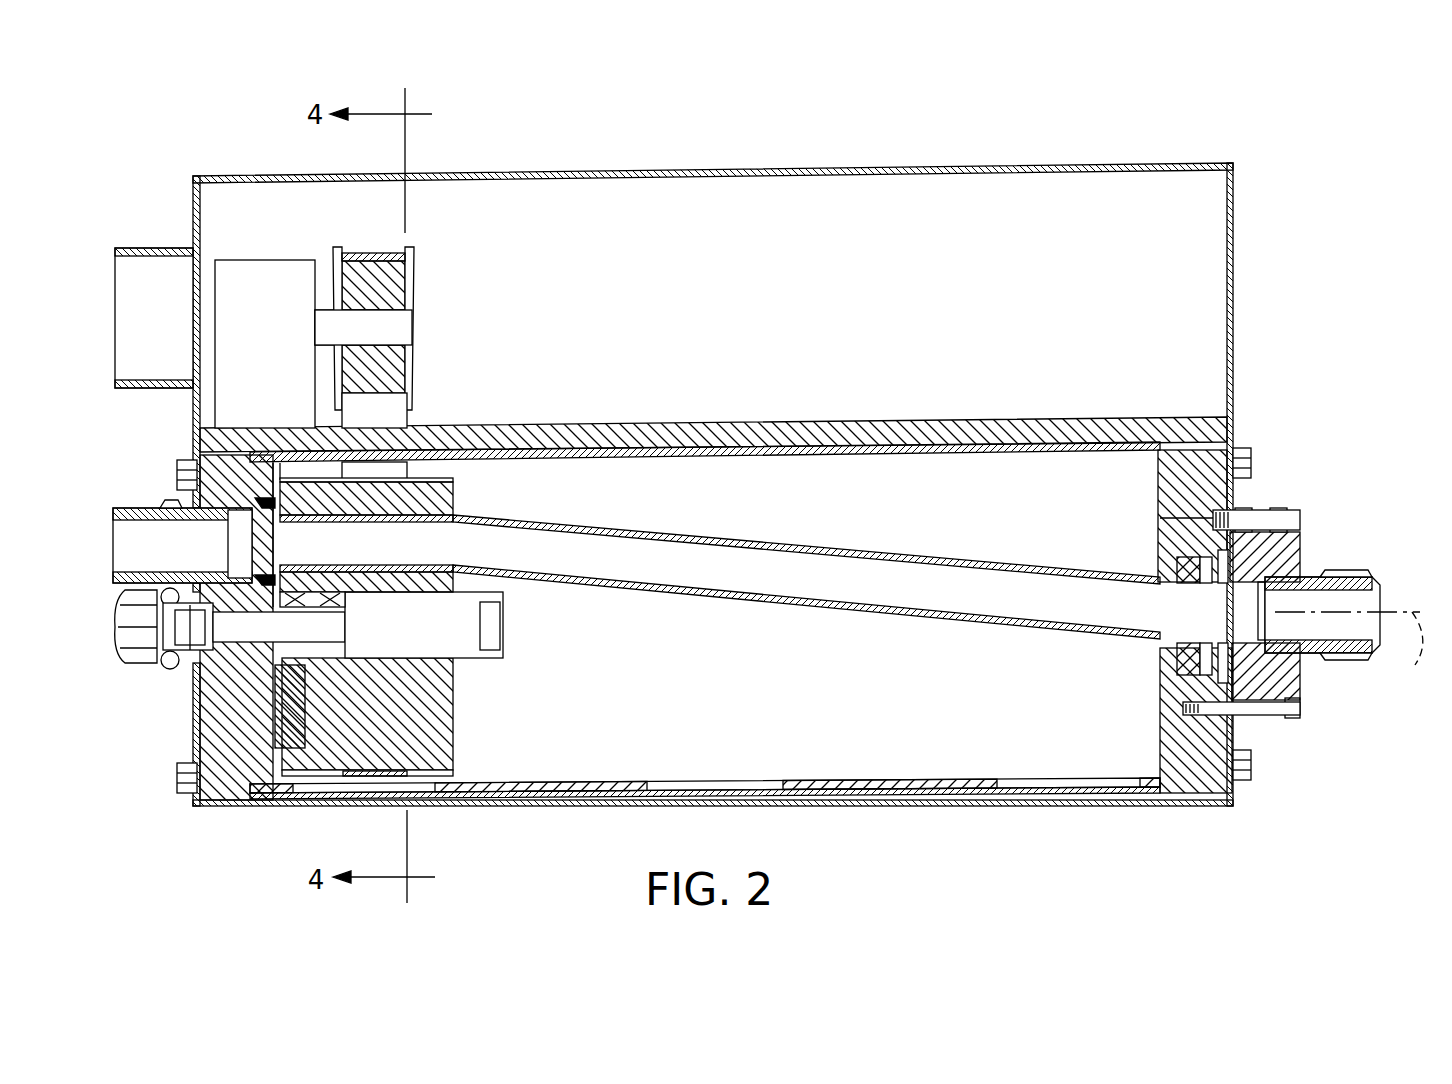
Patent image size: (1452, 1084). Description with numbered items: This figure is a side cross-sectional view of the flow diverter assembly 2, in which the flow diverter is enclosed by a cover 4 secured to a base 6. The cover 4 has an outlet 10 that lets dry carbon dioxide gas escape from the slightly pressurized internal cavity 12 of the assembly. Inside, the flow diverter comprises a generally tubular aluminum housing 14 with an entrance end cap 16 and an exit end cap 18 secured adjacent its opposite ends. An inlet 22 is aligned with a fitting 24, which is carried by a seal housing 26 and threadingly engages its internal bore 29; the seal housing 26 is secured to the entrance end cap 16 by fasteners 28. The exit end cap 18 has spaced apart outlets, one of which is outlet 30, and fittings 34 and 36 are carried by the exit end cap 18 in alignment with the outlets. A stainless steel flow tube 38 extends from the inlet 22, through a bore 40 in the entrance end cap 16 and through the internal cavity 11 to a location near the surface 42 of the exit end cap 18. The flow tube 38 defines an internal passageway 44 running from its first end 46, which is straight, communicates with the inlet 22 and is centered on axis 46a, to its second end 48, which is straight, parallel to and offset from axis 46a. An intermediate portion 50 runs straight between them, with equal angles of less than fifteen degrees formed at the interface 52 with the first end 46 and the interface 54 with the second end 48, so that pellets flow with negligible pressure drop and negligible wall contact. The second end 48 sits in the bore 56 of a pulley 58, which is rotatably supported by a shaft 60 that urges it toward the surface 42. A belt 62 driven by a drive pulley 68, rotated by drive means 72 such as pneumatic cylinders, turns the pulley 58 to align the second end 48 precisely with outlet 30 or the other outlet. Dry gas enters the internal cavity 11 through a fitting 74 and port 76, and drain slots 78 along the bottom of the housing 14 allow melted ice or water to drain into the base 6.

The flow diverter assembly 2 is at (1218, 147).
The cover 4 is at (765, 170).
The base 6 is at (1195, 797).
The outlet 10 is at (135, 317).
The internal cavity 11 is at (825, 505).
The internal cavity 12 is at (740, 302).
The housing 14 is at (935, 788).
The entrance end cap 16 is at (1162, 470).
The exit end cap 18 is at (205, 727).
The inlet 22 is at (1308, 598).
The fitting 24 is at (1357, 574).
The seal housing 26 is at (1300, 672).
The fasteners 28 is at (1296, 520).
The internal bore 29 is at (1258, 590).
The outlet 30 is at (265, 549).
The fitting 34 is at (135, 509).
The fitting 36 is at (140, 662).
The flow tube 38 is at (925, 560).
The bore 40 is at (1160, 580).
The surface 42 is at (292, 789).
The internal passageway 44 is at (858, 595).
The first end 46 is at (1212, 588).
The axis 46a is at (1397, 645).
The second end 48 is at (323, 523).
The intermediate portion 50 is at (720, 532).
The interface 52 is at (1140, 646).
The interface 54 is at (467, 513).
The bore 56 is at (420, 568).
The pulley 58 is at (450, 725).
The shaft 60 is at (465, 659).
The belt 62 is at (378, 250).
The drive pulley 68 is at (395, 285).
The drive means 72 is at (247, 337).
The fitting 74 is at (1262, 508).
The port 76 is at (1160, 522).
The drain slots 78 is at (425, 796).